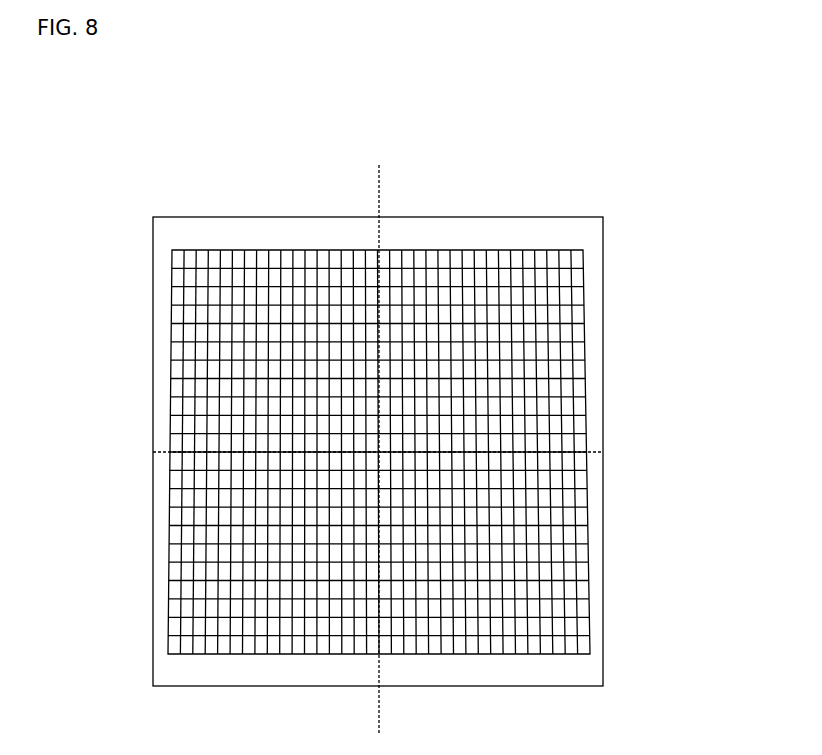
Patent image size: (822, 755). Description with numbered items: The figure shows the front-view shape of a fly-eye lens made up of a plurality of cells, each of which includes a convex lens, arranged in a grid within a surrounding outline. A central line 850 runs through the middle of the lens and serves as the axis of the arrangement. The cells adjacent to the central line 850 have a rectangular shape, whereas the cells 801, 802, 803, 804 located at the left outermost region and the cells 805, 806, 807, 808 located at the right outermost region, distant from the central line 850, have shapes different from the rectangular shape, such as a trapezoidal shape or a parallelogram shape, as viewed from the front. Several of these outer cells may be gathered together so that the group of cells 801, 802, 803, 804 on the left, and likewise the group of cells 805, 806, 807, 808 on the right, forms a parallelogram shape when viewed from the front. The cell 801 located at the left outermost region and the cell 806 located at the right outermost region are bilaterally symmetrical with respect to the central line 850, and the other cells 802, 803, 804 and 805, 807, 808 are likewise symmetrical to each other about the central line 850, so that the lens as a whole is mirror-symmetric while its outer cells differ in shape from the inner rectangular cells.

The cell 801 is at (174, 250).
The cell 802 is at (188, 250).
The cell 803 is at (172, 287).
The cell 804 is at (192, 287).
The cell 805 is at (565, 250).
The cell 806 is at (583, 250).
The cell 807 is at (572, 293).
The cell 808 is at (586, 273).
The central line 850 is at (380, 165).